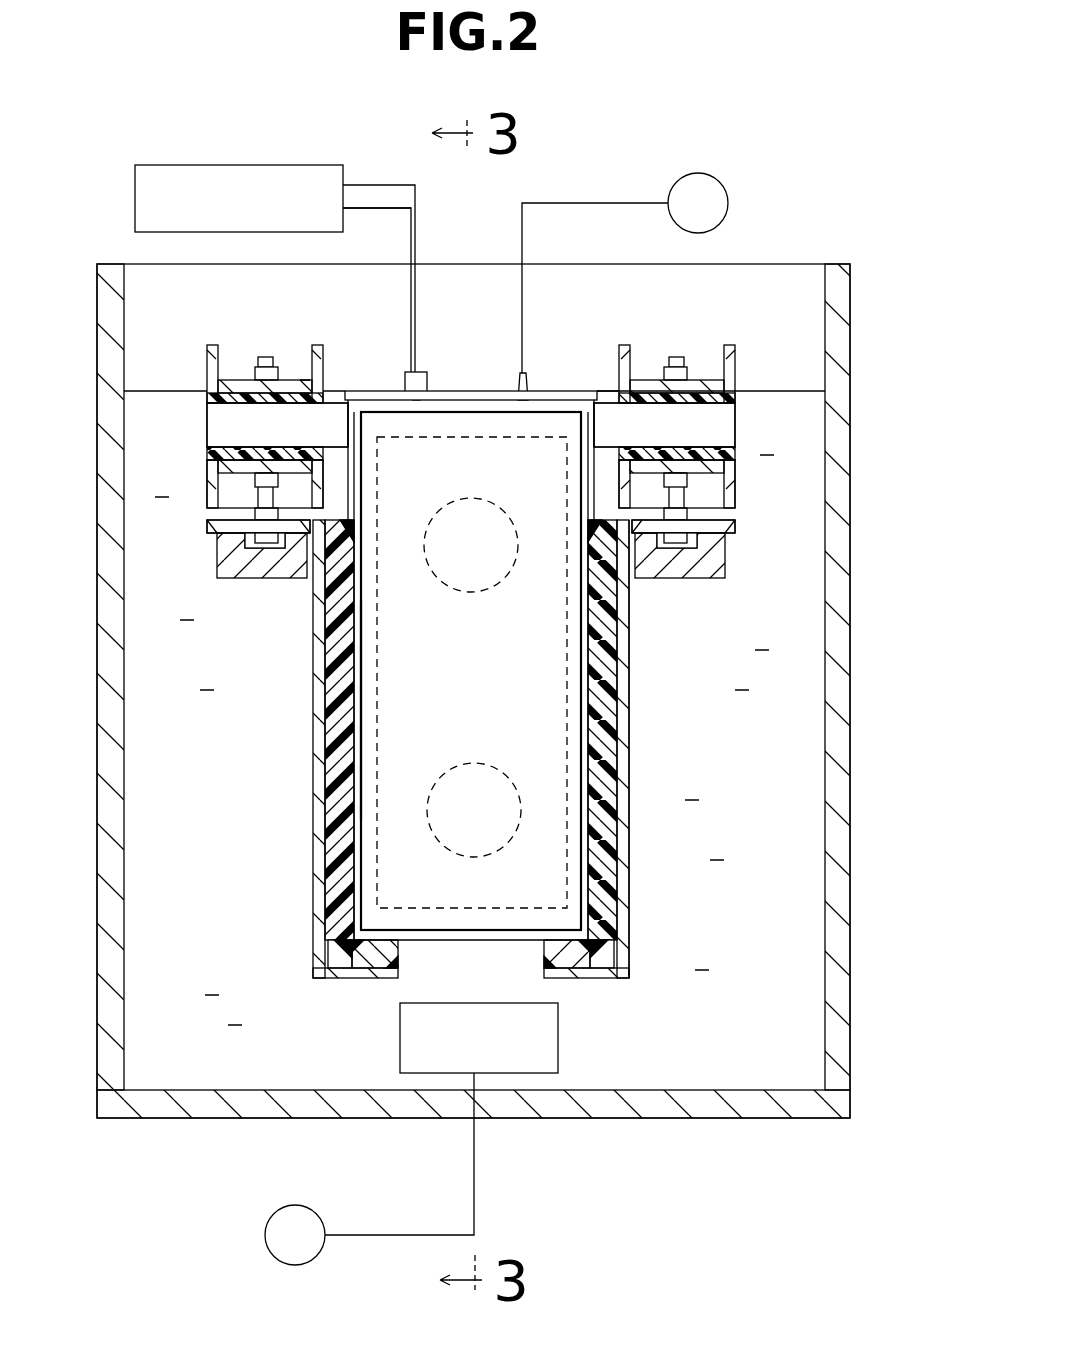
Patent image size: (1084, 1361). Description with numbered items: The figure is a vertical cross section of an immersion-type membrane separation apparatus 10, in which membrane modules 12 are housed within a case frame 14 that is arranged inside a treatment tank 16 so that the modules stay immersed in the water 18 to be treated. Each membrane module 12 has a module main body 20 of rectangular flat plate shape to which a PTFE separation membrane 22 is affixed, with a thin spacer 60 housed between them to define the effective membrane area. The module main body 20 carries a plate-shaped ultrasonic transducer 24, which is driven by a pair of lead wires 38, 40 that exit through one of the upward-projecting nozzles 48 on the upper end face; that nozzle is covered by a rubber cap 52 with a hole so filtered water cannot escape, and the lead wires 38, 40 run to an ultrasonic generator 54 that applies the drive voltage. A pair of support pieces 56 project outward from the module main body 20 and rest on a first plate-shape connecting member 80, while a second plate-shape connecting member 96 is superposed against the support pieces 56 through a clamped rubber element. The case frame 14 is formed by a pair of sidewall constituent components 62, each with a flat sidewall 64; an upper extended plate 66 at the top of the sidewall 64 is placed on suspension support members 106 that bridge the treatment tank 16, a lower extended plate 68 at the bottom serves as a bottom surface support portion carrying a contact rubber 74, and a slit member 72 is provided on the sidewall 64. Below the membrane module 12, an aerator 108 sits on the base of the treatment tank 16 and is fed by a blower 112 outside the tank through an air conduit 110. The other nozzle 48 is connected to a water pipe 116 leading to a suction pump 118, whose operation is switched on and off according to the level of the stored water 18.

The immersion-type membrane separation apparatus 10 is at (850, 264).
The membrane module 12 is at (547, 395).
The case frame 14 is at (634, 642).
The treatment tank 16 is at (845, 500).
The water to be treated 18 is at (812, 612).
The module main body 20 is at (445, 410).
The separation membrane 22 is at (575, 872).
The ultrasonic transducer 24 is at (450, 548).
The lead wire 38 is at (372, 185).
The lead wire 40 is at (368, 208).
The nozzle 48 is at (412, 396).
The rubber cap 52 is at (408, 378).
The ultrasonic generator 54 is at (290, 165).
The support piece 56 is at (217, 428).
The spacer 60 is at (390, 710).
The sidewall constituent component 62 is at (318, 650).
The sidewall 64 is at (322, 772).
The upper extended plate 66 is at (215, 527).
The lower extended plate 68 is at (345, 975).
The slit member 72 is at (340, 915).
The contact rubber 74 is at (385, 952).
The first plate-shape connecting member 80 is at (207, 478).
The second plate-shape connecting member 96 is at (207, 345).
The suspension support member 106 is at (235, 568).
The aerator 108 is at (540, 1045).
The air conduit 110 is at (475, 1165).
The blower 112 is at (305, 1250).
The water pipe 116 is at (553, 203).
The suction pump 118 is at (705, 178).